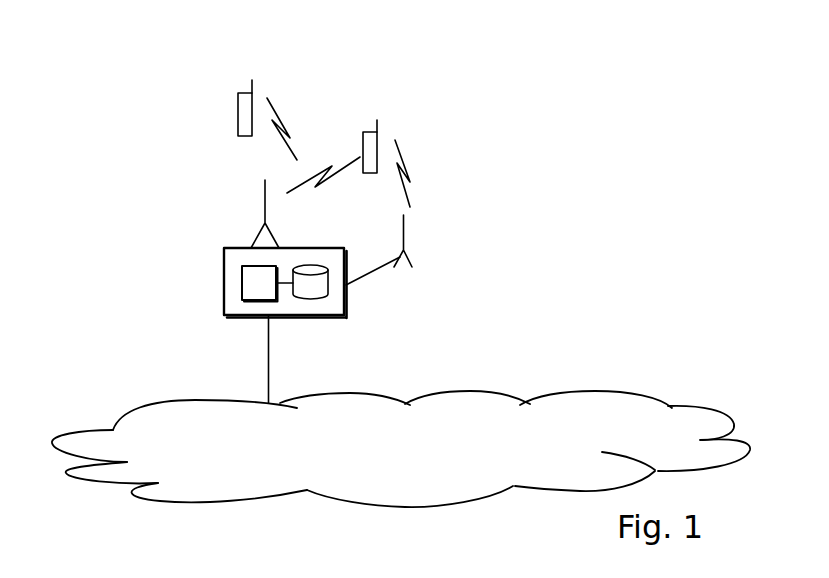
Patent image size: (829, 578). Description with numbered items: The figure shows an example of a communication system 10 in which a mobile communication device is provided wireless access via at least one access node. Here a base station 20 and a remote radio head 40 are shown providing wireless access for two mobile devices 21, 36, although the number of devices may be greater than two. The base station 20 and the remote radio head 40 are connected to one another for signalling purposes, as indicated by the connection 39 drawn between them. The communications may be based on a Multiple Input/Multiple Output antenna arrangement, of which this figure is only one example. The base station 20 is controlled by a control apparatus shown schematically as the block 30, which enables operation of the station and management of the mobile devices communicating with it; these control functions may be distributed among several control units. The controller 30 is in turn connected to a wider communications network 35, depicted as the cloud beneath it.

The communication system 10 is at (103, 43).
The base station 20 is at (265, 207).
The device 21 is at (372, 148).
The control apparatus 30 is at (224, 258).
The wider communications network 35 is at (100, 428).
The device 36 is at (248, 127).
The connection 39 is at (369, 268).
The remote radio head 40 is at (405, 235).